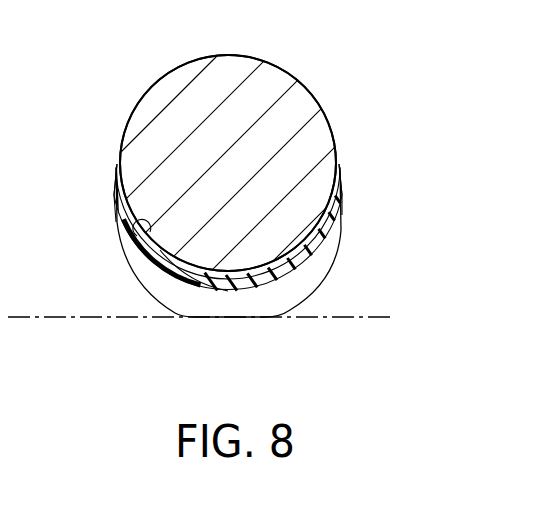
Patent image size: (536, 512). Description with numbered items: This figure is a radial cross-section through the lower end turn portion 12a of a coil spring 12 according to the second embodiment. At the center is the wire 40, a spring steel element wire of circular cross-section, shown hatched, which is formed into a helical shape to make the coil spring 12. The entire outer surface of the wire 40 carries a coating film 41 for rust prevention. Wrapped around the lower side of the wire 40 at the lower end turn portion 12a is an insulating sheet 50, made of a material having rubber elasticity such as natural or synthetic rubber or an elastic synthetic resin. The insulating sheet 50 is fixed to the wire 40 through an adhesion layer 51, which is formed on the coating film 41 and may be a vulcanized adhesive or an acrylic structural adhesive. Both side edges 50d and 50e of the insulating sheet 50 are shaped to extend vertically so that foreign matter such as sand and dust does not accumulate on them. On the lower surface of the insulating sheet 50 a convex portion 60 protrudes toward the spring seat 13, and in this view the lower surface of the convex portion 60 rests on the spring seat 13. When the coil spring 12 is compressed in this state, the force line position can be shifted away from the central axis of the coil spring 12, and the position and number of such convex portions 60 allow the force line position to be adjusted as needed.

The coil spring 12 is at (291, 72).
The lower end turn portion 12a is at (233, 256).
The spring seat 13 is at (130, 317).
The wire 40 is at (224, 88).
The coating film 41 is at (207, 273).
The insulating sheet 50 is at (325, 246).
The side edge of the insulating sheet 50d is at (116, 201).
The side edge of the insulating sheet 50e is at (340, 210).
The adhesion layer 51 is at (123, 233).
The convex portion 60 is at (303, 283).